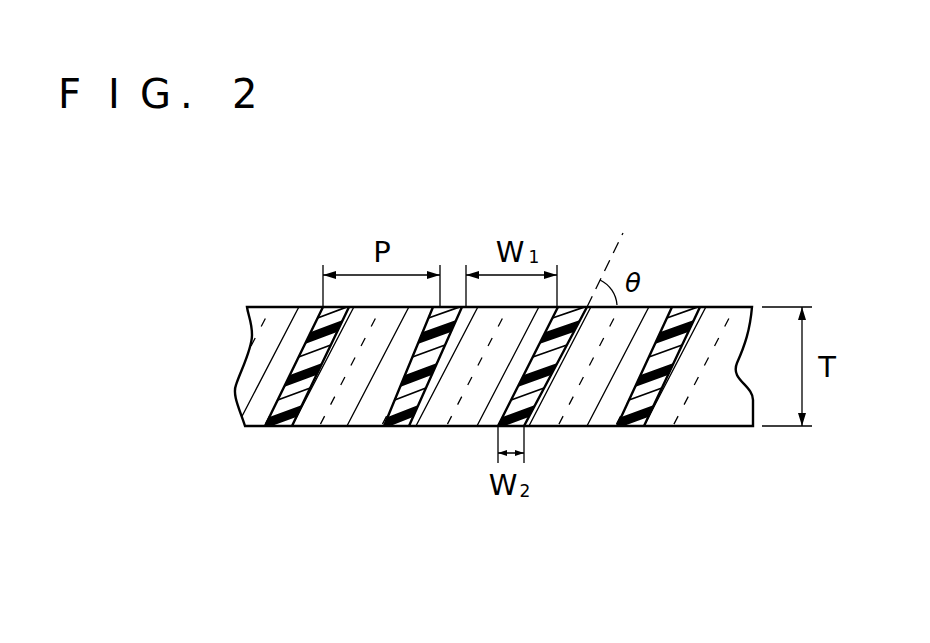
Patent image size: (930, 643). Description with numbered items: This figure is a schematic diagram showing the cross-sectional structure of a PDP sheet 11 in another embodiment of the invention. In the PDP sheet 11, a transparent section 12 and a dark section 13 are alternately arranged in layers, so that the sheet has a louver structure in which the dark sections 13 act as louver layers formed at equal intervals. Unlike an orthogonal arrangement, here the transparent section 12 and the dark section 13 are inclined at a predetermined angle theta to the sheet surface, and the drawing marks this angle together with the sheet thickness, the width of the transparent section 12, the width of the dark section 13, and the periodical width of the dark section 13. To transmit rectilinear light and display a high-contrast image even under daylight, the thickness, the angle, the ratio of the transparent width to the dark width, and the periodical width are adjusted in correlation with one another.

The PDP sheet 11 is at (629, 469).
The transparent section 12 is at (330, 424).
The dark section 13 is at (390, 424).